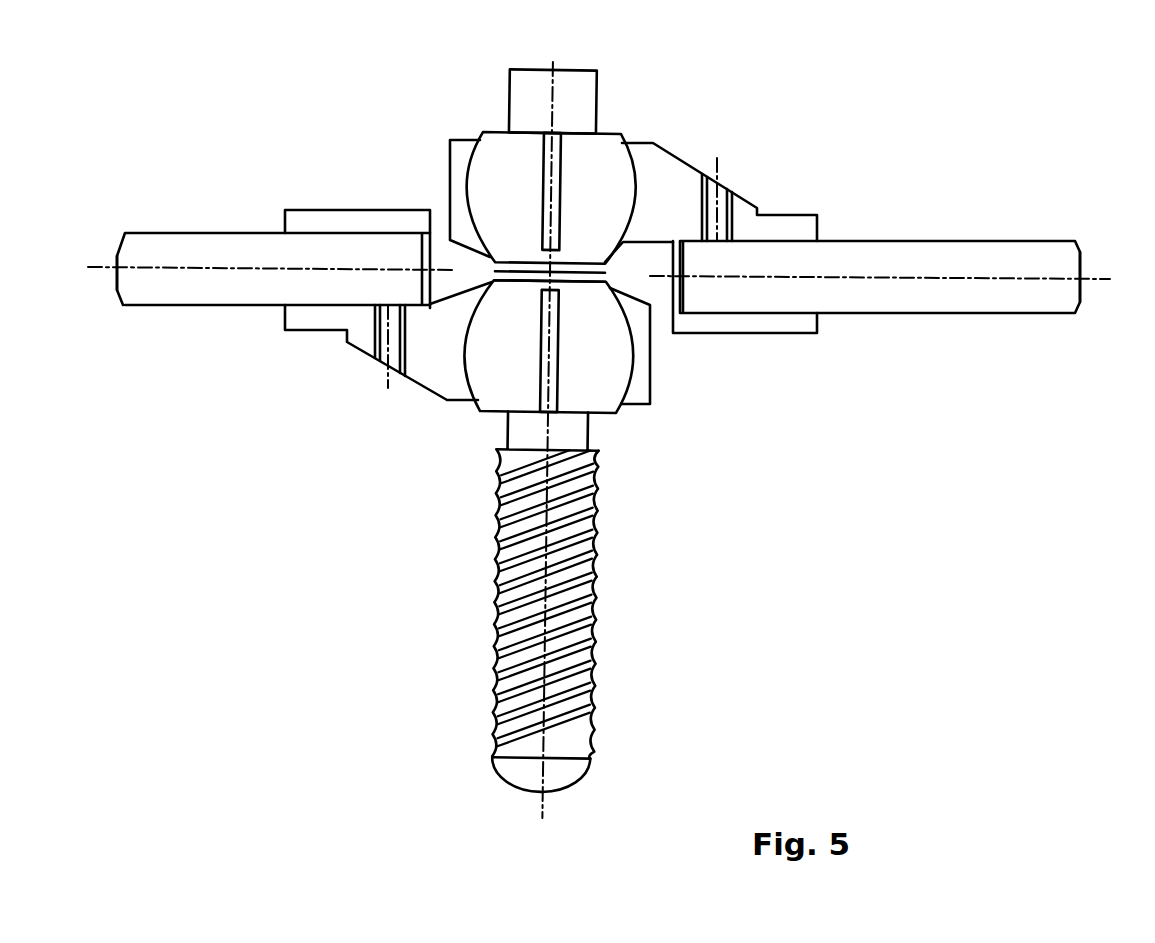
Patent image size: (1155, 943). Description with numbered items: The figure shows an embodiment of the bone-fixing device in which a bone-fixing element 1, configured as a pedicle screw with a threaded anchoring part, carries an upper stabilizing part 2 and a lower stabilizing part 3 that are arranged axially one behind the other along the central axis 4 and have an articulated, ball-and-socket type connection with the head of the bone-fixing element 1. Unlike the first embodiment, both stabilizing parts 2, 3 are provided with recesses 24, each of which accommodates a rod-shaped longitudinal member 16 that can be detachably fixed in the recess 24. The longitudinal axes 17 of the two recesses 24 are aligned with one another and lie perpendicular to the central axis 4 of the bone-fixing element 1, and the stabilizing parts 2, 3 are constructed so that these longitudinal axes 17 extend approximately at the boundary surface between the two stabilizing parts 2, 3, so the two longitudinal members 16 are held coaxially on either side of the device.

The bone-fixing element 1 is at (628, 492).
The upper stabilizing part 2 is at (650, 167).
The lower stabilizing part 3 is at (427, 367).
The central axis 4 is at (550, 670).
The longitudinal member 16 is at (220, 250).
The longitudinal axis 17 is at (203, 267).
The recess 24 is at (393, 233).